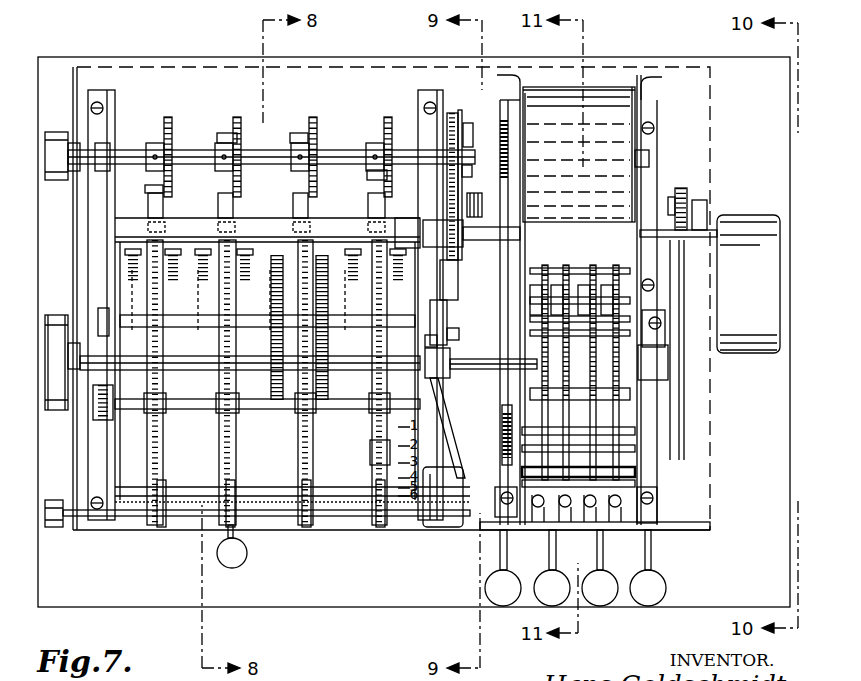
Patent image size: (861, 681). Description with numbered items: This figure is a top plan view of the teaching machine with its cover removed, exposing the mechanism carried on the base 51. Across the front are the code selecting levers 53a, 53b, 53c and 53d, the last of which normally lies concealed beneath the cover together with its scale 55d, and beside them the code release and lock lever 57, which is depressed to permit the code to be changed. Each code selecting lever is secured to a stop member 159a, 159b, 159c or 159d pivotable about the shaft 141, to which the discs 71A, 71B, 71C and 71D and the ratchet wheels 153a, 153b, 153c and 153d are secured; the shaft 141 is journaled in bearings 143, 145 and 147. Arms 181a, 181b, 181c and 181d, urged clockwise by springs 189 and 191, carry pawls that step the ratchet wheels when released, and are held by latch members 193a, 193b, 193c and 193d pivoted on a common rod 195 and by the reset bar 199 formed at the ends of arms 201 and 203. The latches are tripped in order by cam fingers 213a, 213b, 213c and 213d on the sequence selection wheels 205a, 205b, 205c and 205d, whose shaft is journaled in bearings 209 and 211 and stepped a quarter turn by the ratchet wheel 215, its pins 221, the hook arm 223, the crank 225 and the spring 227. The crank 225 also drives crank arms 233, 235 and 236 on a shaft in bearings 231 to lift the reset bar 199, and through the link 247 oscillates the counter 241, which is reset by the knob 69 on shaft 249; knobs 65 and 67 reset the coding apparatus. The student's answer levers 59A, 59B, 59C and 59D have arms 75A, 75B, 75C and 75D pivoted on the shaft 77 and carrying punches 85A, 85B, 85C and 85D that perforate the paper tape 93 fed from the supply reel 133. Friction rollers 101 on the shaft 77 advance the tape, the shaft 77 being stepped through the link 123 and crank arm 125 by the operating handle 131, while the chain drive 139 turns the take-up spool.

The base 51 is at (110, 57).
The reset knob 65 is at (45, 137).
The bearing 209 is at (108, 148).
The bearing 211 is at (425, 140).
The sequence selection wheel 205a is at (172, 117).
The sequence selection wheel 205b is at (241, 117).
The sequence selection wheel 205c is at (317, 117).
The sequence selection wheel 205d is at (392, 117).
The cam finger 213a is at (150, 186).
The cam finger 213b is at (217, 138).
The cam finger 213c is at (291, 134).
The cam finger 213d is at (367, 175).
The latch member 193a is at (148, 205).
The latch member 193b is at (218, 196).
The latch member 193c is at (294, 196).
The latch member 193d is at (370, 200).
The common rod 195 is at (254, 223).
The arm 181a is at (166, 224).
The arm 181b is at (216, 224).
The arm 181c is at (294, 224).
The arm 181d is at (368, 226).
The reset bar 199 is at (404, 224).
The ratchet wheel 153a is at (150, 436).
The ratchet wheel 153b is at (219, 436).
The ratchet wheel 153c is at (297, 436).
The ratchet wheel 153d is at (372, 436).
The scale 55d is at (380, 452).
The stop member 159a is at (173, 300).
The stop member 159b is at (244, 300).
The stop member 159c is at (326, 258).
The stop member 159d is at (399, 320).
The crank arm 236 is at (125, 283).
The arm 203 is at (120, 265).
The spring 189 is at (272, 295).
The spring 191 is at (328, 312).
The reset knob 67 is at (62, 314).
The bearing 143 is at (93, 378).
The bearing 231 is at (99, 306).
The counter reset knob 69 is at (50, 528).
The shaft 249 is at (130, 518).
The code selecting lever 53a is at (163, 528).
The code selecting lever 53b is at (236, 528).
The code selecting lever 53c is at (310, 528).
The code selecting lever 53d is at (383, 528).
The code release and lock lever 57 is at (222, 566).
The chain drive 139 is at (448, 262).
The crank arm 235 is at (408, 275).
The arm 201 is at (442, 298).
The crank arm 233 is at (447, 340).
The bearing 145 is at (450, 377).
The link 247 is at (459, 445).
The counter 241 is at (465, 528).
The shaft 141 is at (500, 354).
The ratchet wheel 215 is at (452, 112).
The hook arm 223 is at (462, 118).
The pin 221 is at (467, 133).
The crank 225 is at (466, 172).
The spring 227 is at (475, 194).
The supply reel 133 is at (600, 88).
The paper tape 93 is at (496, 304).
The crank arm 125 is at (688, 197).
The link 123 is at (677, 298).
The bearing 147 is at (668, 362).
The operating handle 131 is at (780, 303).
The disc 71A is at (538, 268).
The disc 71B is at (564, 278).
The disc 71C is at (590, 268).
The disc 71D is at (614, 275).
The friction roller 101 is at (512, 420).
The shaft 77 is at (505, 486).
The punch 85A is at (532, 500).
The punch 85B is at (560, 512).
The punch 85C is at (590, 512).
The punch 85D is at (615, 512).
The arm 75A is at (508, 548).
The arm 75B is at (557, 547).
The arm 75C is at (604, 550).
The arm 75D is at (652, 548).
The answer lever 59A is at (496, 604).
The answer lever 59B is at (545, 604).
The answer lever 59C is at (593, 604).
The answer lever 59D is at (641, 604).